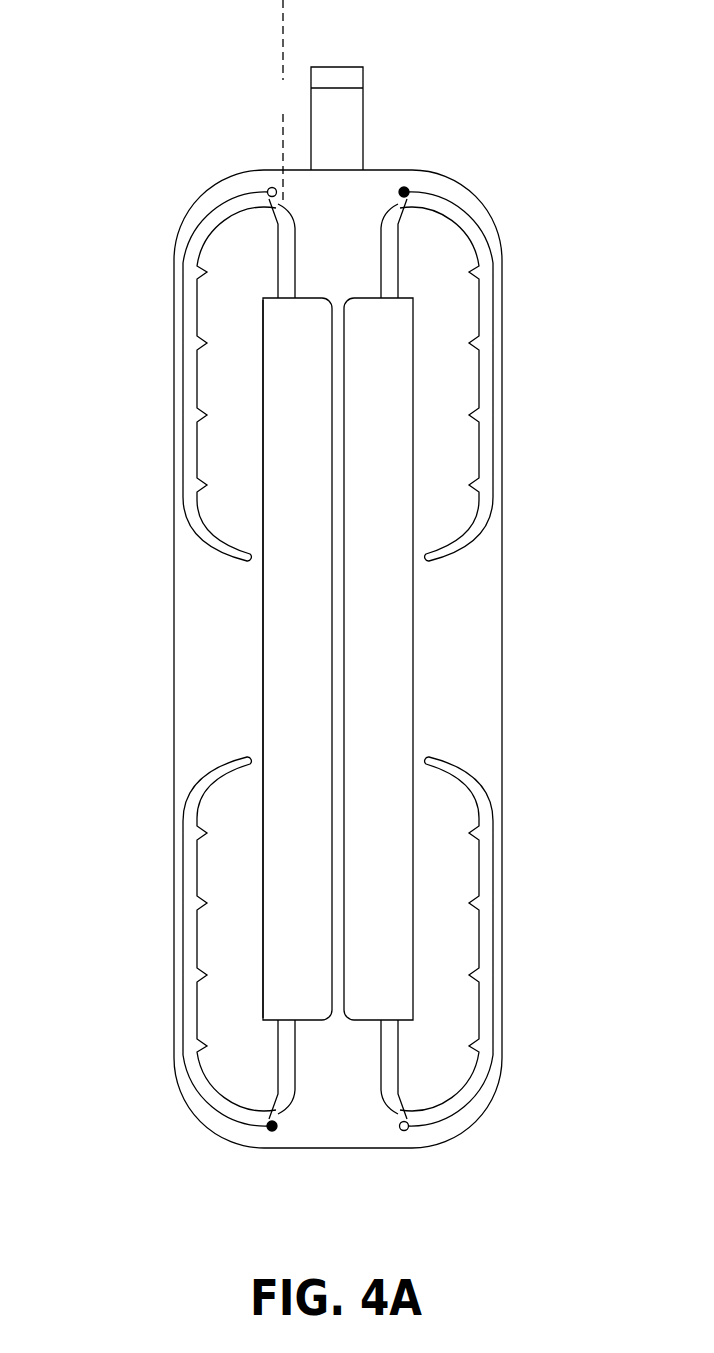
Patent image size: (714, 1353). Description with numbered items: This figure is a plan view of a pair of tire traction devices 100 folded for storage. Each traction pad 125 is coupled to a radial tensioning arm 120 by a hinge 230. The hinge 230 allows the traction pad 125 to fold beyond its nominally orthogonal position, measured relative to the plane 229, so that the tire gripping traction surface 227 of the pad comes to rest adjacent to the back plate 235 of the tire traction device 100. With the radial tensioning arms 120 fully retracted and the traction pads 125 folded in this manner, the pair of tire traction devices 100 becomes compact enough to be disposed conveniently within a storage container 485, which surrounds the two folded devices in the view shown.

The tire traction device 100 is at (278, 672).
The radial tensioning arm 120 is at (283, 235).
The traction pad 125 is at (472, 230).
The tire gripping traction surface 227 is at (200, 412).
The plane 229 is at (282, 101).
The hinge 230 is at (267, 190).
The back plate 235 is at (260, 627).
The storage container 485 is at (473, 652).